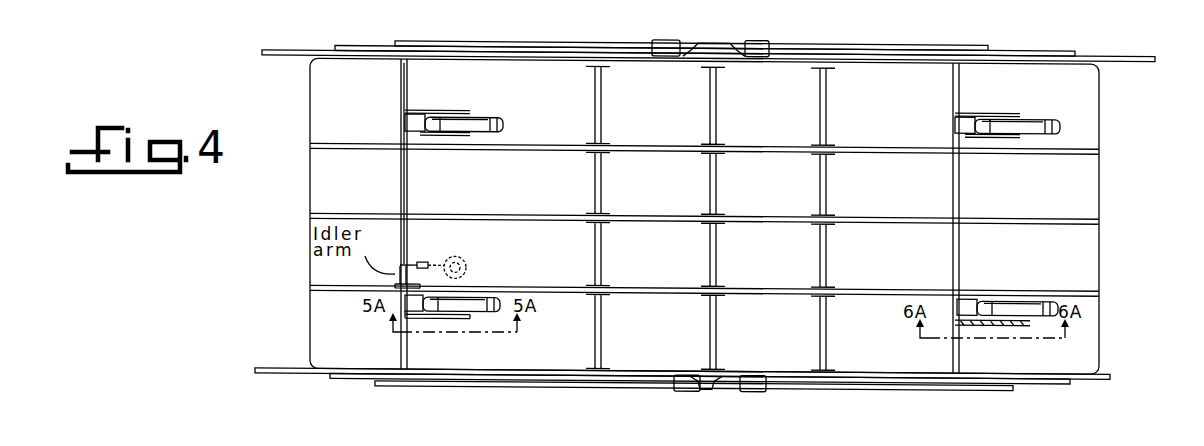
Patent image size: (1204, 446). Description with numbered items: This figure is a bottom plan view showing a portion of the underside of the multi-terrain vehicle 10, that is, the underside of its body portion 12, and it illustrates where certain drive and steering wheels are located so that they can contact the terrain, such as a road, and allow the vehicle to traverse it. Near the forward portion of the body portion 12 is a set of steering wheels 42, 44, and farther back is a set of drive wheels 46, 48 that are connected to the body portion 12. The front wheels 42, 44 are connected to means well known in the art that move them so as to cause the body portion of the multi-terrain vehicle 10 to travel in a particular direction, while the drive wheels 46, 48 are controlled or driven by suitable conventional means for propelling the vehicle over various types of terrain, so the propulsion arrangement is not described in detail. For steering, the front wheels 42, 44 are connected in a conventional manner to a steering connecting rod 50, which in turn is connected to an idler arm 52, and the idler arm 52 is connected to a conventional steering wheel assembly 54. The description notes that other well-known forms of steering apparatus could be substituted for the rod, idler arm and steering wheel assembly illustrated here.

The multi-terrain vehicle 10 is at (717, 39).
The body portion 12 is at (772, 186).
The steering wheel 42 is at (485, 297).
The steering wheel 44 is at (482, 117).
The drive wheel 46 is at (1060, 295).
The drive wheel 48 is at (1058, 122).
The steering connecting rod 50 is at (423, 173).
The idler arm 52 is at (410, 266).
The steering wheel assembly 54 is at (470, 258).